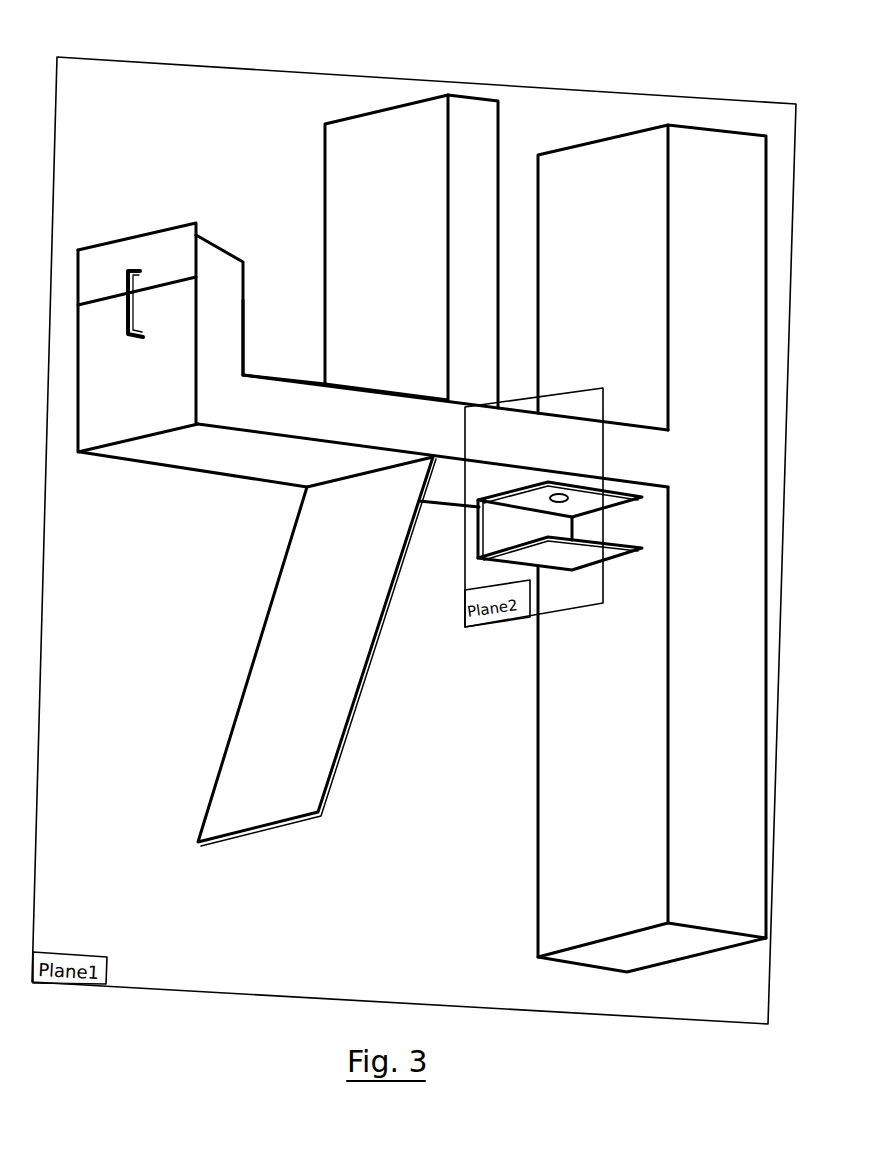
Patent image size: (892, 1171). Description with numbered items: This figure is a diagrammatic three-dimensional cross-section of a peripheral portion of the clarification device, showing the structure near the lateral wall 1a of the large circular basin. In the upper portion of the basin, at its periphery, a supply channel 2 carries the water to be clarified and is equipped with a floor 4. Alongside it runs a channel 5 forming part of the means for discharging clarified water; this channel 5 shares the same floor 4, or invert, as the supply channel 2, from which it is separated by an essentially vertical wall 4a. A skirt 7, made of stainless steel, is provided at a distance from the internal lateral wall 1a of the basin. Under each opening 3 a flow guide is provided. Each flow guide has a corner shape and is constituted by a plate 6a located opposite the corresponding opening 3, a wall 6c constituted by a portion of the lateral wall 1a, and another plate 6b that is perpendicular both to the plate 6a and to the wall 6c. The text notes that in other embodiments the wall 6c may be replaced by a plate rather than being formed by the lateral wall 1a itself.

The lateral wall 1a is at (728, 202).
The supply channel 2 is at (519, 322).
The opening 3 is at (566, 497).
The floor 4 is at (223, 412).
The vertical wall 4a is at (343, 183).
The channel 5 is at (287, 297).
The plate 6a is at (523, 557).
The plate 6b is at (480, 536).
The wall 6c is at (613, 530).
The skirt 7 is at (343, 743).